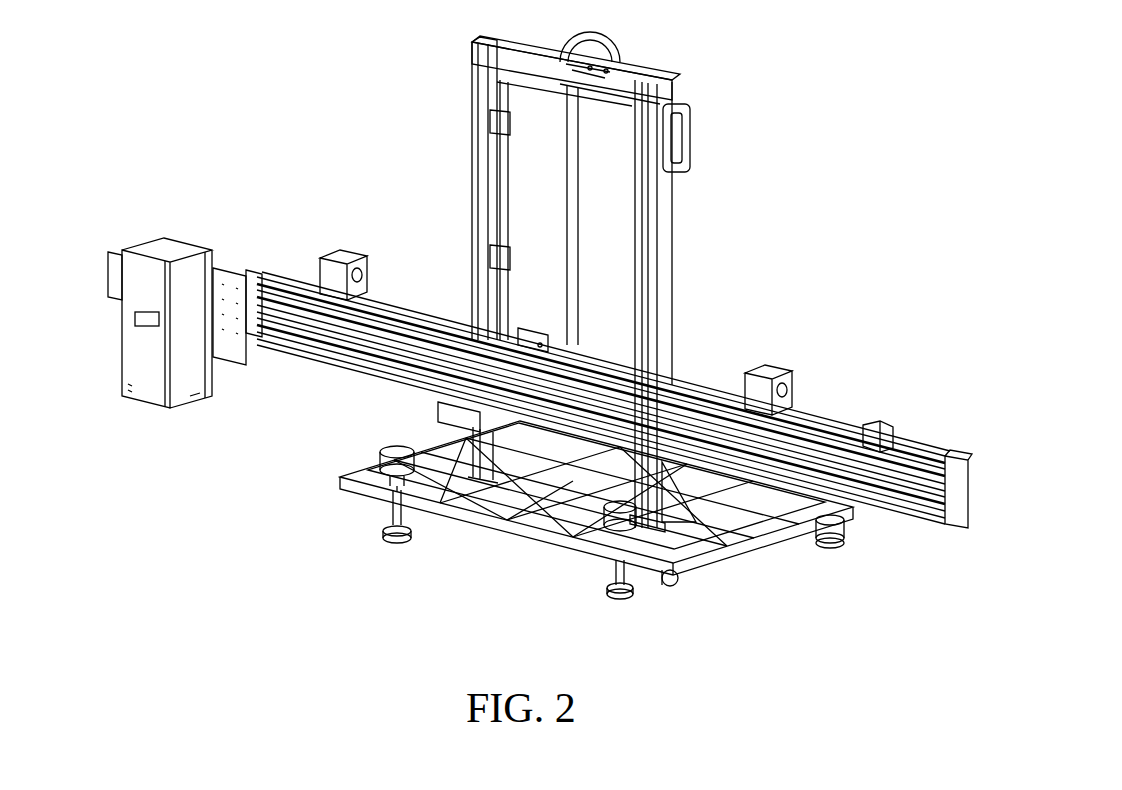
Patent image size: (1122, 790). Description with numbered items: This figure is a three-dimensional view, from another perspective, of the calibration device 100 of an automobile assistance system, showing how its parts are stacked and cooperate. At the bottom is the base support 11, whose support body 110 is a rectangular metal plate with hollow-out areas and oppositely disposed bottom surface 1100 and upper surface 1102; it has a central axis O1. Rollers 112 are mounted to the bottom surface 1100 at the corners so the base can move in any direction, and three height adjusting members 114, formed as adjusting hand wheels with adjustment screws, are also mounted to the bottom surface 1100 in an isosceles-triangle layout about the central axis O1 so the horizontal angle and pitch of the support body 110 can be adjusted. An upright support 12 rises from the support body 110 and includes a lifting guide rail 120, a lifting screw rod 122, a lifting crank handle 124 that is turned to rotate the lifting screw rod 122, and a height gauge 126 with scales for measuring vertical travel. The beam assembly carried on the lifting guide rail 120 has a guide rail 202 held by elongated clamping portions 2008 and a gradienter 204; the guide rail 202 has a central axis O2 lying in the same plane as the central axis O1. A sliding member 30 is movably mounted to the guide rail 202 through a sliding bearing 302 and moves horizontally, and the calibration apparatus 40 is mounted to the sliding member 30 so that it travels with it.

The calibration device 100 is at (747, 161).
The base support 11 is at (804, 565).
The support body 110 is at (732, 553).
The roller 112 is at (673, 582).
The height adjusting member 114 is at (627, 607).
The bottom surface 1100 is at (345, 488).
The upper surface 1102 is at (352, 470).
The upright support 12 is at (378, 15).
The lifting guide rail 120 is at (475, 160).
The lifting screw rod 122 is at (575, 222).
The lifting crank handle 124 is at (565, 52).
The height gauge 126 is at (500, 265).
The guide rail 202 is at (803, 423).
The gradienter 204 is at (522, 330).
The clamping portion 2008 is at (455, 325).
The sliding member 30 is at (228, 265).
The sliding bearing 302 is at (262, 273).
The calibration apparatus 40 is at (163, 240).
The central axis O1 is at (424, 519).
The central axis O2 is at (540, 343).